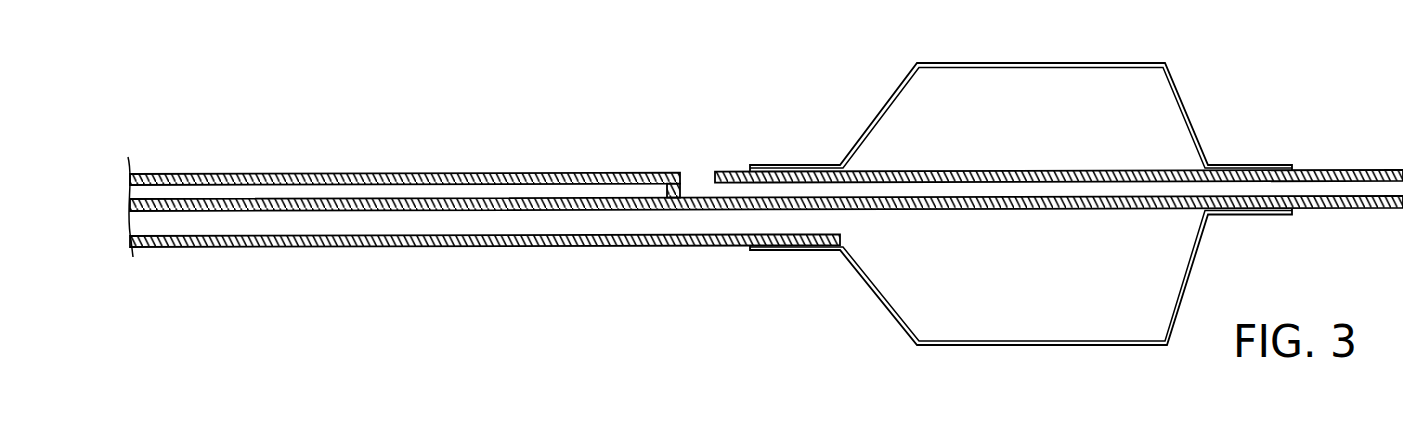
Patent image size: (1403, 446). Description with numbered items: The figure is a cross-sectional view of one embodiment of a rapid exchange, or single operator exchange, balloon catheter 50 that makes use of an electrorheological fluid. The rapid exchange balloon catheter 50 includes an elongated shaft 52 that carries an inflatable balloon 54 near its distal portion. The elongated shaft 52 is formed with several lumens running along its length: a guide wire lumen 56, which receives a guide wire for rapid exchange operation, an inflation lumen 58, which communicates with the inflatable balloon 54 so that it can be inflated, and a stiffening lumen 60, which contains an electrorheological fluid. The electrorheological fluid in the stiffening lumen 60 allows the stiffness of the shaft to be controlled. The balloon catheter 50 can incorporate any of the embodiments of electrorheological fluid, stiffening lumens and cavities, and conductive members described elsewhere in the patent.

The rapid exchange balloon catheter 50 is at (888, 36).
The elongated shaft 52 is at (312, 246).
The inflatable balloon 54 is at (1188, 103).
The guide wire lumen 56 is at (718, 192).
The inflation lumen 58 is at (830, 221).
The stiffening lumen 60 is at (542, 193).